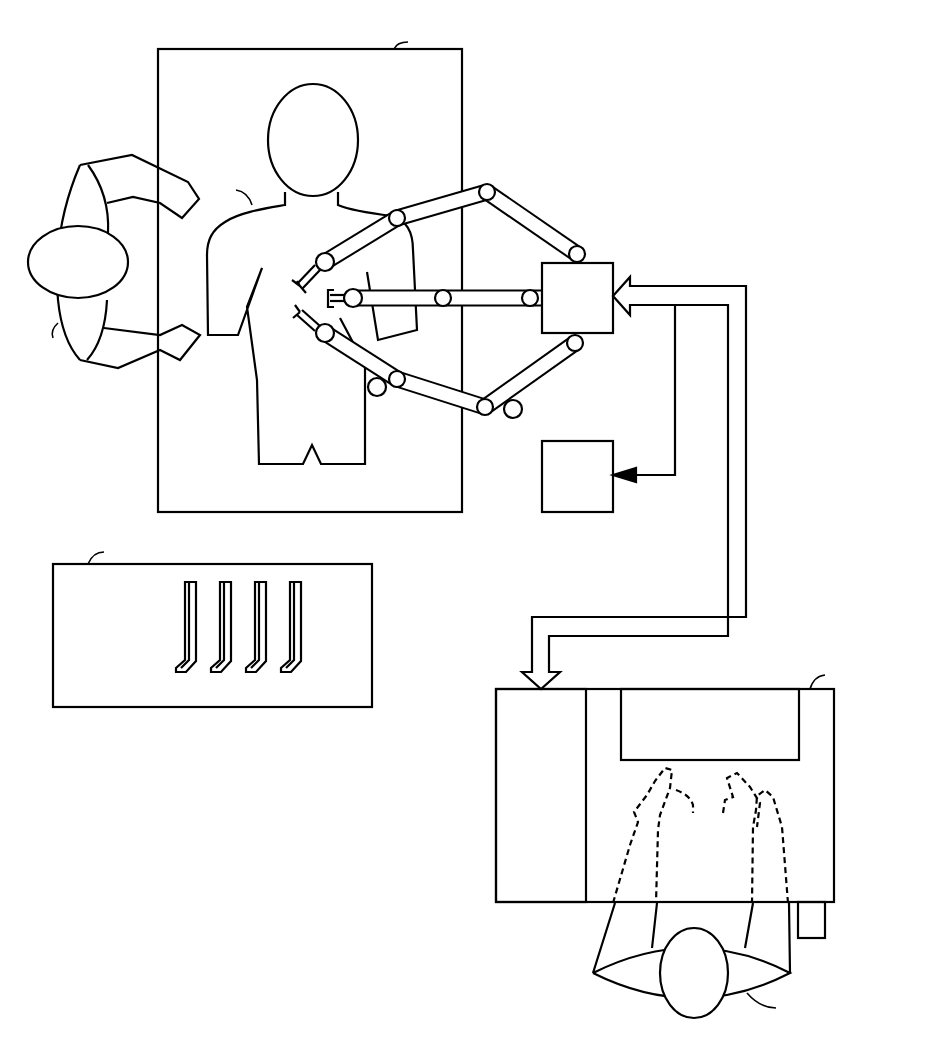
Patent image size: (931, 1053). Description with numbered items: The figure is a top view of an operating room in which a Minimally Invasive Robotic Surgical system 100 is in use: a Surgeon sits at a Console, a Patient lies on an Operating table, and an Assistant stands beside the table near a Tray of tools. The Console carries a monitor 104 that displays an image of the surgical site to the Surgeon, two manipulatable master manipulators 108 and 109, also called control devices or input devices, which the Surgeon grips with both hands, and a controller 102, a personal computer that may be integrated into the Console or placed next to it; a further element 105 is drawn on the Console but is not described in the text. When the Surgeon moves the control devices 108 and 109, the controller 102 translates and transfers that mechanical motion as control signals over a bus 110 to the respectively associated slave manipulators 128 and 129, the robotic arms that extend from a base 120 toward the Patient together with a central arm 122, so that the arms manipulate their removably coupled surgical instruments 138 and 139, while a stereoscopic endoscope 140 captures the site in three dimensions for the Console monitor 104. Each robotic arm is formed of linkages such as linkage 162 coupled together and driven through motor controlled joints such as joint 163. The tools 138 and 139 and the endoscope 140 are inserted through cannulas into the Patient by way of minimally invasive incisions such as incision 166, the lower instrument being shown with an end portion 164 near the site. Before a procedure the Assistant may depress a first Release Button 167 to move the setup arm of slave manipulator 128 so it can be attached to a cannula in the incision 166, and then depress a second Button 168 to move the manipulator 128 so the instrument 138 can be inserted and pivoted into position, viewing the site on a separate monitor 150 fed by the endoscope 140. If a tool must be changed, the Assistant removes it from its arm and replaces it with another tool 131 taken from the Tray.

The Minimally Invasive Robotic Surgical (MIRS) system 100 is at (668, 125).
The controller 102 is at (524, 809).
The monitor 104 is at (694, 739).
The console control 105 is at (818, 938).
The master manipulator 108 is at (677, 795).
The master manipulator 109 is at (723, 813).
The bus 110 is at (728, 570).
The robot base 120 is at (562, 309).
The central robotic arm 122 is at (480, 270).
The slave manipulator 128 is at (481, 368).
The slave manipulator 129 is at (520, 175).
The tool 131 is at (168, 645).
The surgical instrument 138 is at (296, 334).
The surgical instrument 139 is at (305, 252).
The stereoscopic endoscope 140 is at (342, 280).
The monitor 150 is at (562, 488).
The linkage 162 is at (449, 370).
The joint 163 is at (400, 398).
The lower surgical instrument 164 is at (314, 357).
The incision 166 is at (291, 308).
The first Release Button 167 is at (538, 410).
The second Button 168 is at (374, 408).